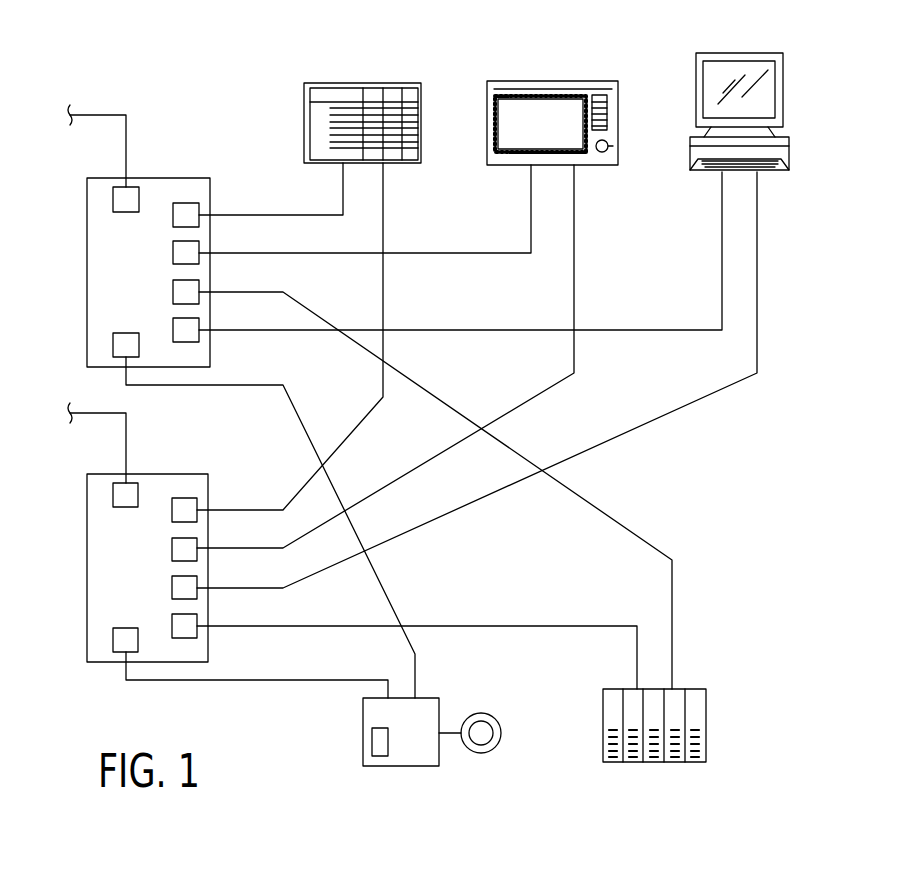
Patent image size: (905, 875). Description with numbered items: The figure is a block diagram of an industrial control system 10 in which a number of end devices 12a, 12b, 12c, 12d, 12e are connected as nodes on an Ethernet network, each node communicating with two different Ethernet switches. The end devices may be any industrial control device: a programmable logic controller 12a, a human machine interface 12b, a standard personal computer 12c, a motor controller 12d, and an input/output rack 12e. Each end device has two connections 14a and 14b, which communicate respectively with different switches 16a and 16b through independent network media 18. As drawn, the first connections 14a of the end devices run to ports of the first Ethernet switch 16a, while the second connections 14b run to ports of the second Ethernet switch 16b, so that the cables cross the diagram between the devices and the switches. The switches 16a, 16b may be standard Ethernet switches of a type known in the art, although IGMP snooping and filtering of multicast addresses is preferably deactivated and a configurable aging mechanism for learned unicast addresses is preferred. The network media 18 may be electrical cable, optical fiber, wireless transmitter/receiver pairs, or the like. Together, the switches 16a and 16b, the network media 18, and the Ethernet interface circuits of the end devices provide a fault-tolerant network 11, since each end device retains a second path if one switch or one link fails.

The industrial control system 10 is at (268, 86).
The fault-tolerant network 11 is at (728, 470).
The programmable logic controller end device 12a is at (340, 83).
The human machine interface end device 12b is at (553, 81).
The personal computer end device 12c is at (737, 53).
The motor controller end device 12d is at (400, 766).
The input/output rack end device 12e is at (650, 762).
The first connection 14a is at (326, 176).
The second connection 14b is at (399, 181).
The first Ethernet switch 16a is at (87, 268).
The second Ethernet switch 16b is at (87, 565).
The network media 18 is at (530, 400).